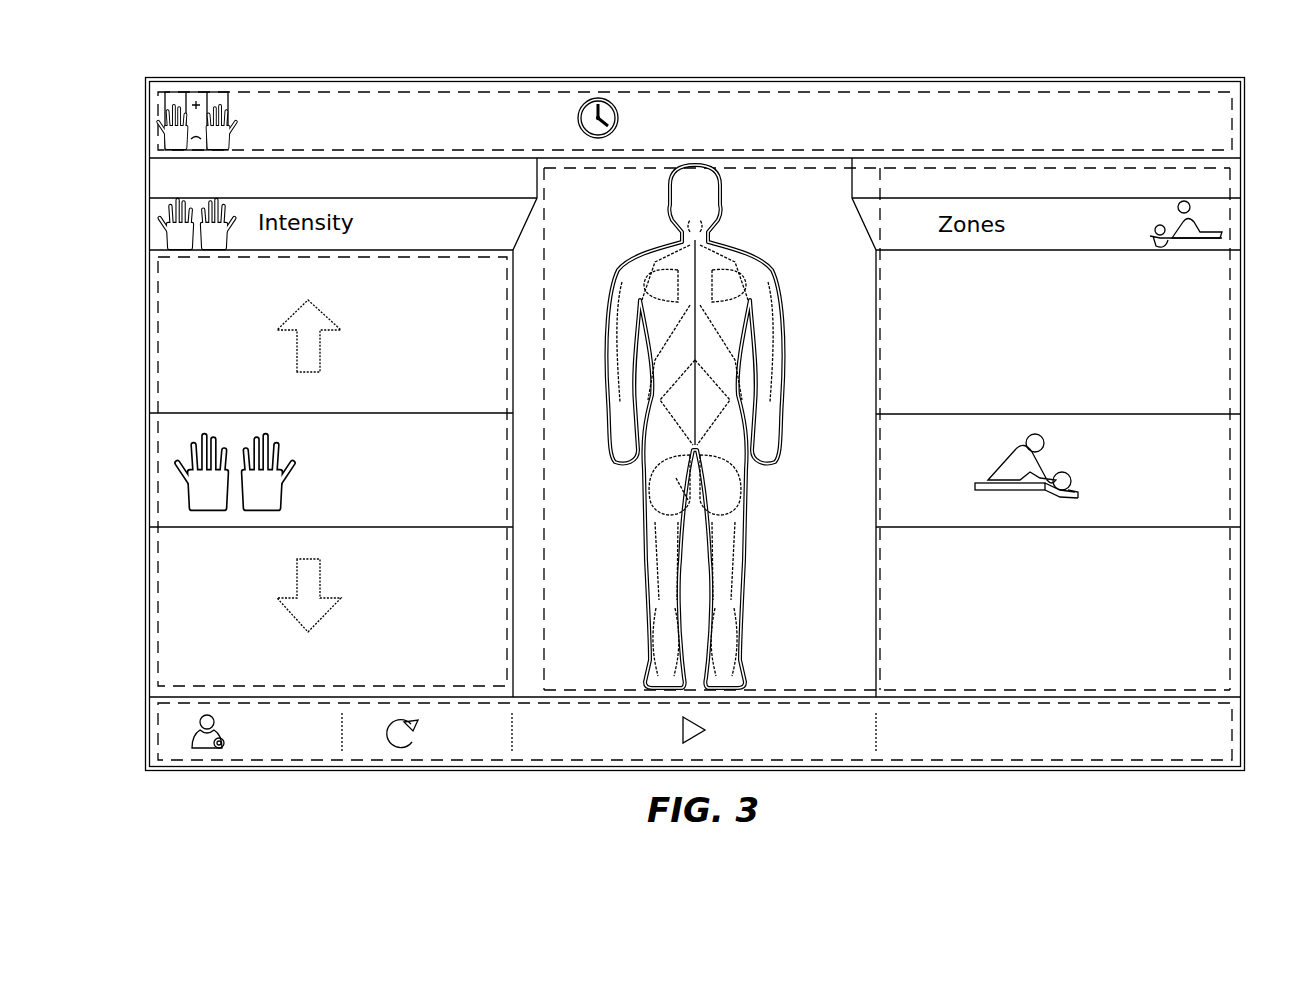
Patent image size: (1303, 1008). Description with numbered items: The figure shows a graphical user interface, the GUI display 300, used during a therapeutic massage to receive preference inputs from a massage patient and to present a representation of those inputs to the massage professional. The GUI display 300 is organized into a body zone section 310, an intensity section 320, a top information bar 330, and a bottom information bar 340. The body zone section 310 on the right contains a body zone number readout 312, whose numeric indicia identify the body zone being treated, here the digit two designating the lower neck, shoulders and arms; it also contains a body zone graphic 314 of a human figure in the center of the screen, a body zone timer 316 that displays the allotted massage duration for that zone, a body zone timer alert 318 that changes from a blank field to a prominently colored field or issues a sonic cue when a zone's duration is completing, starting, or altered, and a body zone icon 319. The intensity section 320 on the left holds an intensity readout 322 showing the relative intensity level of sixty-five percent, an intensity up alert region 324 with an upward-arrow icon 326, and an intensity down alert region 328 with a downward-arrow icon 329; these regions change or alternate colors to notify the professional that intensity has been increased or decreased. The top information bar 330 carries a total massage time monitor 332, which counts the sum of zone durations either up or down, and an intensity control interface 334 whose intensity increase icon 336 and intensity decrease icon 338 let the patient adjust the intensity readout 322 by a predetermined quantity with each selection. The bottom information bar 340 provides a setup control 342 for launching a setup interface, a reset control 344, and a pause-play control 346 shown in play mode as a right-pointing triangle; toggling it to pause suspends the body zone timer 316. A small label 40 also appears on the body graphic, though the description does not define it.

The GUI display 300 is at (308, 68).
The body zone section 310 is at (1228, 313).
The body zone number readout 312 is at (912, 460).
The body zone graphic 314 is at (782, 318).
The body zone timer 316 is at (1142, 458).
The body zone timer alert 318 is at (1203, 580).
The body zone icon 319 is at (1016, 440).
The intensity section 320 is at (507, 378).
The intensity readout 322 is at (362, 462).
The intensity up alert region 324 is at (180, 397).
The icon 326 is at (297, 347).
The intensity down alert region 328 is at (178, 625).
The icon 329 is at (297, 583).
The top information bar 330 is at (936, 96).
The total massage time monitor 332 is at (722, 106).
The intensity control interface 334 is at (205, 101).
The intensity increase icon 336 is at (200, 120).
The intensity decrease icon 338 is at (207, 150).
The bottom information bar 340 is at (1030, 758).
The setup control 342 is at (210, 708).
The reset control 344 is at (390, 708).
The pause-play control 346 is at (680, 722).
The massage zone 40 is at (677, 479).